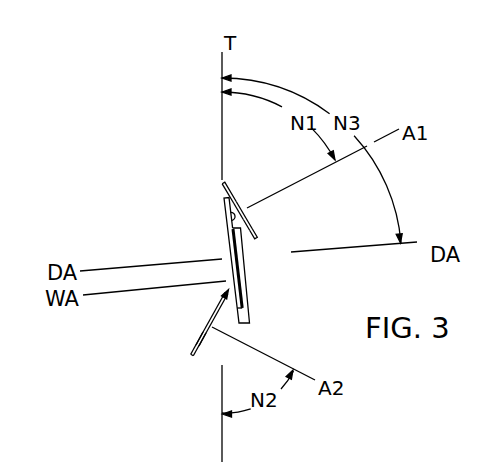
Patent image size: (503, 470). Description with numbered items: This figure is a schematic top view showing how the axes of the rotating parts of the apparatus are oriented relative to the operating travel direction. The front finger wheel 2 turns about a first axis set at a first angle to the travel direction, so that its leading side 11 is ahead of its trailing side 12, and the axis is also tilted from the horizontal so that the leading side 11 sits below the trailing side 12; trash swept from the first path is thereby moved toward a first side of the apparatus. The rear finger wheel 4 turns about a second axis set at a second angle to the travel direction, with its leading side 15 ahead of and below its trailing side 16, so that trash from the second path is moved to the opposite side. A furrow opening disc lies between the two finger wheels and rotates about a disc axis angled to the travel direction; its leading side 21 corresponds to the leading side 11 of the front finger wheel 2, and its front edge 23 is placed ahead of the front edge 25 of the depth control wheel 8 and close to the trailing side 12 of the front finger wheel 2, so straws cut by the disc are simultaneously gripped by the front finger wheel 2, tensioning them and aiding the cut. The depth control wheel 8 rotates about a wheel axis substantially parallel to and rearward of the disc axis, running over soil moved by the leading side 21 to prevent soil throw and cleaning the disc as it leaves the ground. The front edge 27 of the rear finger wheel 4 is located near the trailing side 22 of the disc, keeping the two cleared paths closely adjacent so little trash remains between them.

The front finger wheel 2 is at (255, 238).
The rear finger wheel 4 is at (192, 356).
The depth control wheel 8 is at (249, 311).
The leading side of the front finger wheel 11 is at (252, 226).
The trailing side of the front finger wheel 12 is at (222, 183).
The leading side of the rear finger wheel 15 is at (198, 342).
The trailing side of the rear finger wheel 16 is at (203, 338).
The leading side of the disc 21 is at (230, 215).
The trailing side of the disc 22 is at (232, 230).
The front edge of the disc 23 is at (224, 198).
The front edge of the depth control wheel 25 is at (247, 208).
The front edge of the rear finger wheel 27 is at (223, 294).